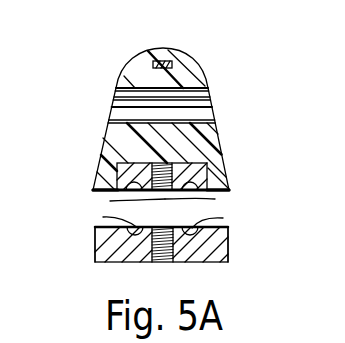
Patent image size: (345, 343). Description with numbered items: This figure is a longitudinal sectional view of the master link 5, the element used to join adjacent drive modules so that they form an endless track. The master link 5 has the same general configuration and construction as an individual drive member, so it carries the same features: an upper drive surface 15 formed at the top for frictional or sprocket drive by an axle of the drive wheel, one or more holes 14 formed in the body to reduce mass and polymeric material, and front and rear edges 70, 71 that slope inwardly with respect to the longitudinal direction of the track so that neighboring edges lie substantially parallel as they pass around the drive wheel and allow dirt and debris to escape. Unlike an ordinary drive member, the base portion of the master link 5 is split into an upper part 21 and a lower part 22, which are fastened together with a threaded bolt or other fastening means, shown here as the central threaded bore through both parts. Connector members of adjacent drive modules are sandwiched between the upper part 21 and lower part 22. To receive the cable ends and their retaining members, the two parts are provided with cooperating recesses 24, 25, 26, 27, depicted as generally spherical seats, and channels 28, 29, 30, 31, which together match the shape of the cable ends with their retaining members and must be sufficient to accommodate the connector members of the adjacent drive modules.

The master link 5 is at (210, 61).
The hole 14 is at (120, 108).
The upper drive surface 15 is at (158, 49).
The front edge 70 is at (107, 138).
The rear edge 71 is at (218, 131).
The upper part of base portion 21 is at (198, 164).
The lower part of base portion 22 is at (229, 261).
The channel 28 is at (110, 192).
The channel 30 is at (215, 192).
The recess 24 is at (110, 201).
The recess 26 is at (215, 199).
The recess 25 is at (103, 217).
The recess 27 is at (223, 218).
The channel 29 is at (94, 233).
The channel 31 is at (229, 236).